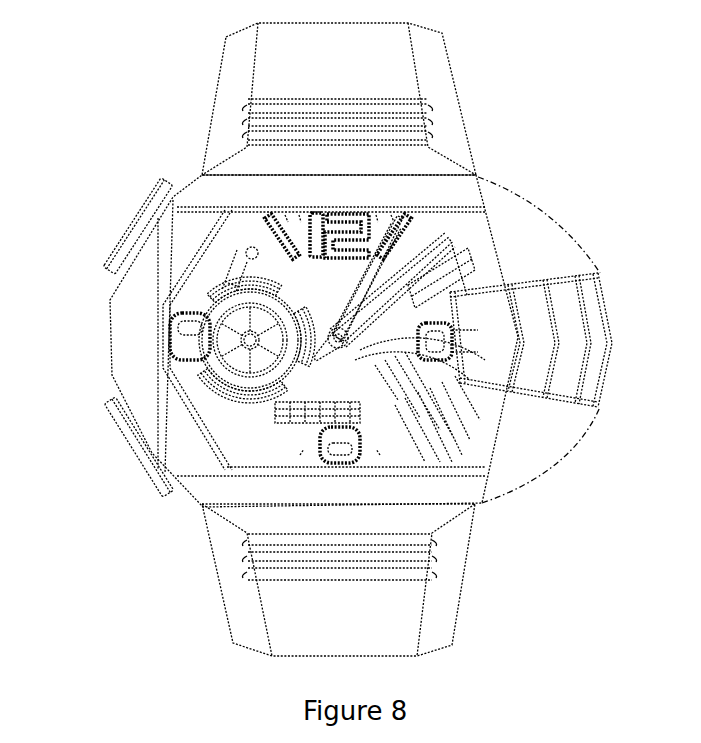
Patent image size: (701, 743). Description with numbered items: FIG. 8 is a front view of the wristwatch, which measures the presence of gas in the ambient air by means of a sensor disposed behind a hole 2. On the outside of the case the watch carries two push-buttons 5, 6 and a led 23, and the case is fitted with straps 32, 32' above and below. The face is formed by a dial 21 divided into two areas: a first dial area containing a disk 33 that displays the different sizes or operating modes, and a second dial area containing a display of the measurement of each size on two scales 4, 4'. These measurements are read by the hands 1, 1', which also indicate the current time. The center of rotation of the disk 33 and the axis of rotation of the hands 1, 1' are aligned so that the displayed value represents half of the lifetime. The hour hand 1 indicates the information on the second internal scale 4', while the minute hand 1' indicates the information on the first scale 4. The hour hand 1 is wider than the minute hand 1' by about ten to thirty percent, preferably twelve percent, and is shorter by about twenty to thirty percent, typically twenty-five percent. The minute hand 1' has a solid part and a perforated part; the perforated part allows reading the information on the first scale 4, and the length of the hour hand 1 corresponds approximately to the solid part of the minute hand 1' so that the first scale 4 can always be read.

The hour hand 1 is at (275, 231).
The minute hand 1' is at (432, 384).
The hole 2 is at (590, 307).
The first scale 4 is at (538, 287).
The second internal scale 4' is at (510, 254).
The push-button 5 is at (118, 462).
The push-button 6 is at (128, 208).
The dial 21 is at (428, 223).
The led 23 is at (247, 250).
The upper strap 32 is at (312, 99).
The lower strap 32' is at (316, 584).
The disk 33 is at (212, 303).